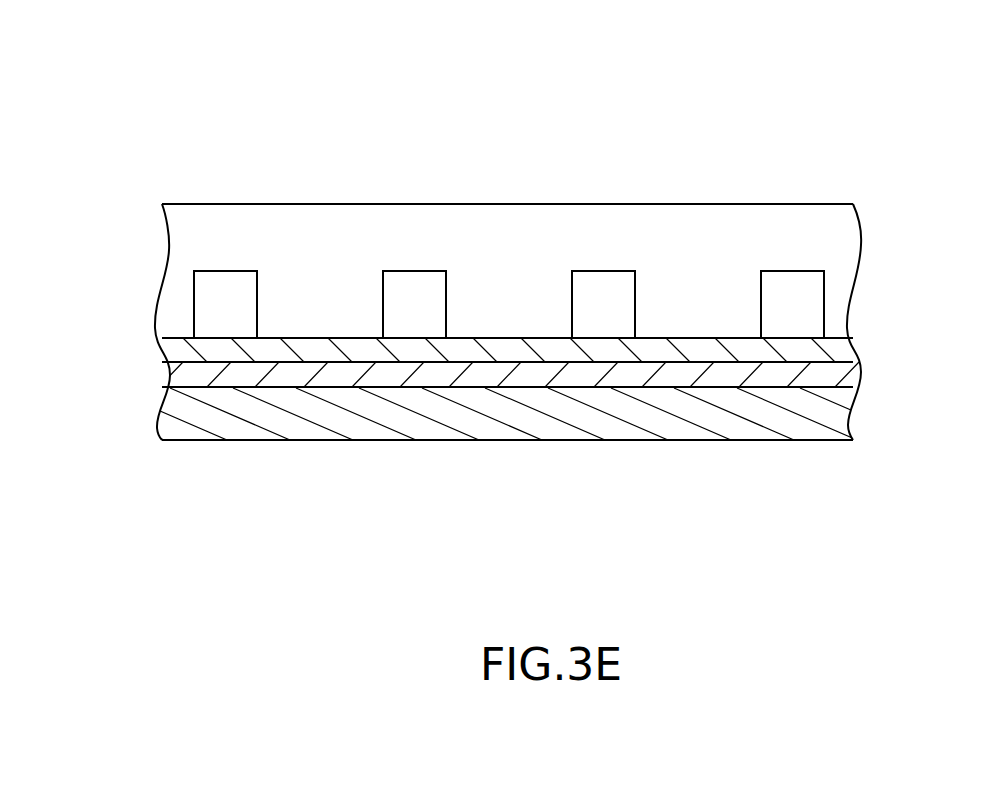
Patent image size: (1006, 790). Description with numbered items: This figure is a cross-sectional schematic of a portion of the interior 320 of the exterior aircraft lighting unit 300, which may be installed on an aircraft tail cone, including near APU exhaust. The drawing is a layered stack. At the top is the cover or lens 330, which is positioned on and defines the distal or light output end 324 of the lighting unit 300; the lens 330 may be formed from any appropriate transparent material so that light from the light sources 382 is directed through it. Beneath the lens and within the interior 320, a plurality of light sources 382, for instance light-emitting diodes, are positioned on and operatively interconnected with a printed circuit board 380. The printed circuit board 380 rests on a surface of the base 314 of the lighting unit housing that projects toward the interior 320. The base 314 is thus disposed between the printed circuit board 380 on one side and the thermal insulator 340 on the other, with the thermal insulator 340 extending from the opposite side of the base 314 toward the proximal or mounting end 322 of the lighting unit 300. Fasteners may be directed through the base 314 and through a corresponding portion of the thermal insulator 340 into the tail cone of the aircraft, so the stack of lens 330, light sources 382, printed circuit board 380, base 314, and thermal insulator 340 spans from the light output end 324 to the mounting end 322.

The exterior aircraft lighting unit 300 is at (889, 160).
The interior 320 is at (617, 233).
The proximal or mounting end 322 is at (343, 459).
The distal or light output end 324 is at (404, 153).
The cover or lens 330 is at (490, 203).
The light sources 382 is at (383, 305).
The printed circuit board 380 is at (855, 350).
The base 314 is at (858, 377).
The thermal insulator 340 is at (855, 410).